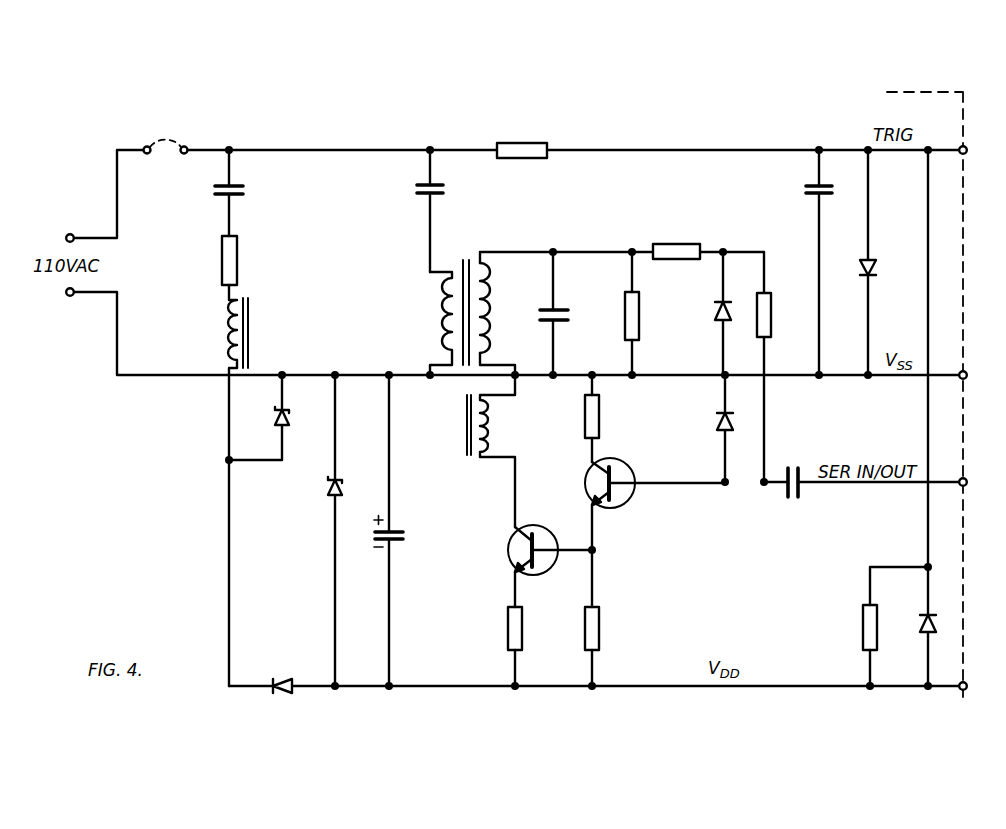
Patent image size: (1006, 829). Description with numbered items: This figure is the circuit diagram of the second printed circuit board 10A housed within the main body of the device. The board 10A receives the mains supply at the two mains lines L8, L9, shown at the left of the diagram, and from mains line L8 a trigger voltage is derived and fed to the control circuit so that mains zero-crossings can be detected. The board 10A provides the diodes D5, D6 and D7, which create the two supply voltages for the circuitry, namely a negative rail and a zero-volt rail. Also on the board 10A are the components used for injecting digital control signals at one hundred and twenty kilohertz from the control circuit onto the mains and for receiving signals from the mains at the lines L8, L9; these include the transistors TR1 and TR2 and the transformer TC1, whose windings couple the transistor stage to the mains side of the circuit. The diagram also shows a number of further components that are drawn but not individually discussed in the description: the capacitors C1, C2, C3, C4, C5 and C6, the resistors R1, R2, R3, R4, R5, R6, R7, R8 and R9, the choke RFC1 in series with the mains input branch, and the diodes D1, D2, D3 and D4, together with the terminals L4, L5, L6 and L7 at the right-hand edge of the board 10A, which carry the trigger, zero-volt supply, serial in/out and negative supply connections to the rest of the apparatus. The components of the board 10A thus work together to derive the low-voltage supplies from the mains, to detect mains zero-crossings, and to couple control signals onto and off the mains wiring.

The printed circuit board 10A is at (957, 68).
The trigger terminal L4 is at (974, 151).
The VSS terminal L5 is at (974, 376).
The serial in/out terminal L6 is at (974, 483).
The VDD terminal L7 is at (974, 687).
The mains line L8 is at (68, 227).
The mains line L9 is at (68, 306).
The capacitor C1 is at (243, 193).
The resistor R1 is at (244, 260).
The radio frequency choke RFC1 is at (205, 330).
The capacitor C2 is at (443, 211).
The transformer TC1 is at (460, 393).
The resistor R2 is at (522, 140).
The capacitor C6 is at (567, 313).
The resistor R4 is at (645, 313).
The resistor R3 is at (676, 240).
The zener diode D4 is at (709, 313).
The resistor R5 is at (778, 315).
The capacitor C3 is at (806, 262).
The diode D1 is at (882, 262).
The diode D7 is at (272, 417).
The diode D5 is at (349, 530).
The electrolytic capacitor C5 is at (402, 530).
The diode D6 is at (282, 672).
The resistor R9 is at (605, 418).
The transistor TR1 is at (625, 504).
The transistor TR2 is at (529, 566).
The resistor R6 is at (529, 646).
The resistor R7 is at (605, 618).
The zener diode D3 is at (708, 428).
The capacitor C4 is at (791, 495).
The resistor R8 is at (880, 626).
The zener diode D2 is at (914, 628).